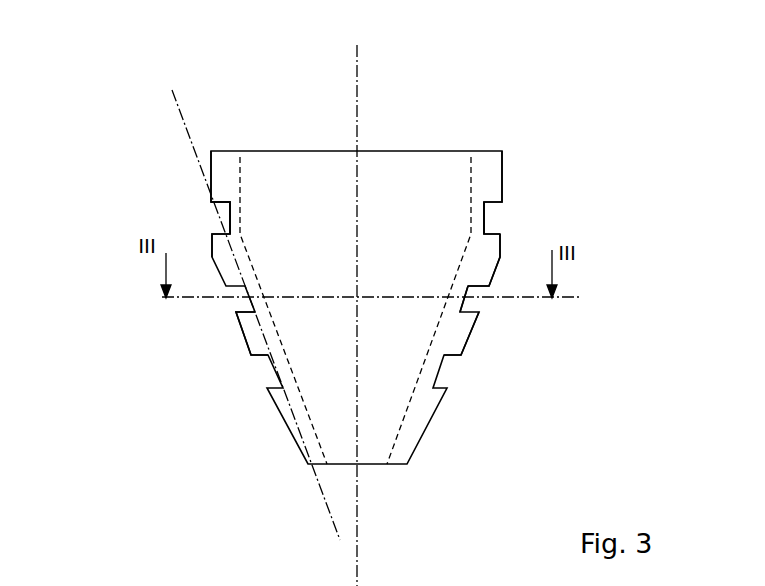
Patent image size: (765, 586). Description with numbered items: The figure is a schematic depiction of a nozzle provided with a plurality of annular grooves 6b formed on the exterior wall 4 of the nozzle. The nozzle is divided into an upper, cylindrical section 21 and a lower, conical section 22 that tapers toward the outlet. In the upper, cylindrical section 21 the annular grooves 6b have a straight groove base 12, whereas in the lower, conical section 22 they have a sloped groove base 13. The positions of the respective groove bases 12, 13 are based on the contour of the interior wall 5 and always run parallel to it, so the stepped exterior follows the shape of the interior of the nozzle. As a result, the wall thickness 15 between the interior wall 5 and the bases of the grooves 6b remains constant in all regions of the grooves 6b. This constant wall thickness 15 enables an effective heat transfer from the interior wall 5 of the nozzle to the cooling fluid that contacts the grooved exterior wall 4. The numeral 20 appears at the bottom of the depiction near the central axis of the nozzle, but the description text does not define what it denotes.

The exterior wall 4 is at (500, 168).
The interior wall 5 is at (461, 265).
The annular grooves 6b is at (497, 218).
The straight groove base 12 is at (484, 202).
The sloped groove base 13 is at (185, 122).
The wall thickness 15 is at (484, 222).
The longitudinal axis 20 is at (402, 315).
The upper, cylindrical section 21 is at (208, 192).
The lower, conical section 22 is at (247, 342).